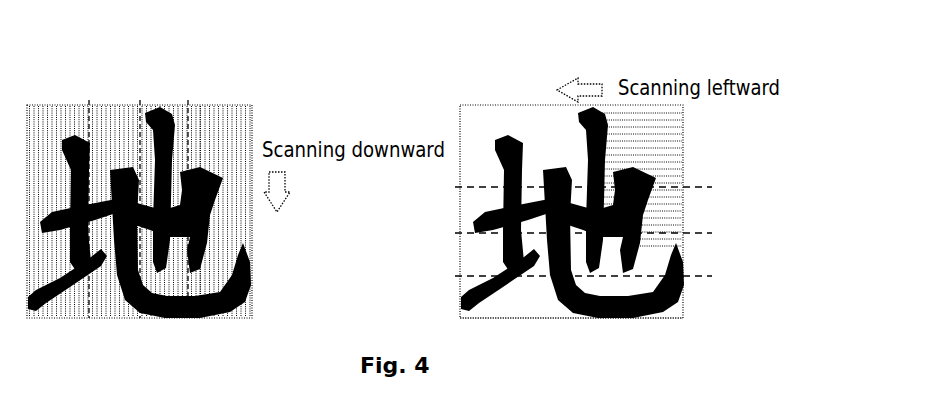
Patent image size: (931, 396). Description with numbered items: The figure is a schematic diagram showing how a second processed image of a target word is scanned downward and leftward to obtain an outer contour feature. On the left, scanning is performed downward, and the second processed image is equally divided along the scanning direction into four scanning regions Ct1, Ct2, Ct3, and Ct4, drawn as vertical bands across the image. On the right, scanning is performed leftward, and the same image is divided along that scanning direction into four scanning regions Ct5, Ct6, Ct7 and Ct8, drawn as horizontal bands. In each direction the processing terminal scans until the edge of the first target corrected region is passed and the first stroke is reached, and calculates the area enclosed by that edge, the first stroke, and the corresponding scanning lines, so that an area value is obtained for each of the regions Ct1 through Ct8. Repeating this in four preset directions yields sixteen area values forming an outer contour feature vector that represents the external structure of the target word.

The scanning region Ct1 is at (67, 198).
The scanning region Ct2 is at (119, 198).
The scanning region Ct3 is at (170, 198).
The scanning region Ct4 is at (214, 198).
The scanning region Ct5 is at (589, 161).
The scanning region Ct6 is at (589, 218).
The scanning region Ct7 is at (589, 261).
The scanning region Ct8 is at (591, 305).